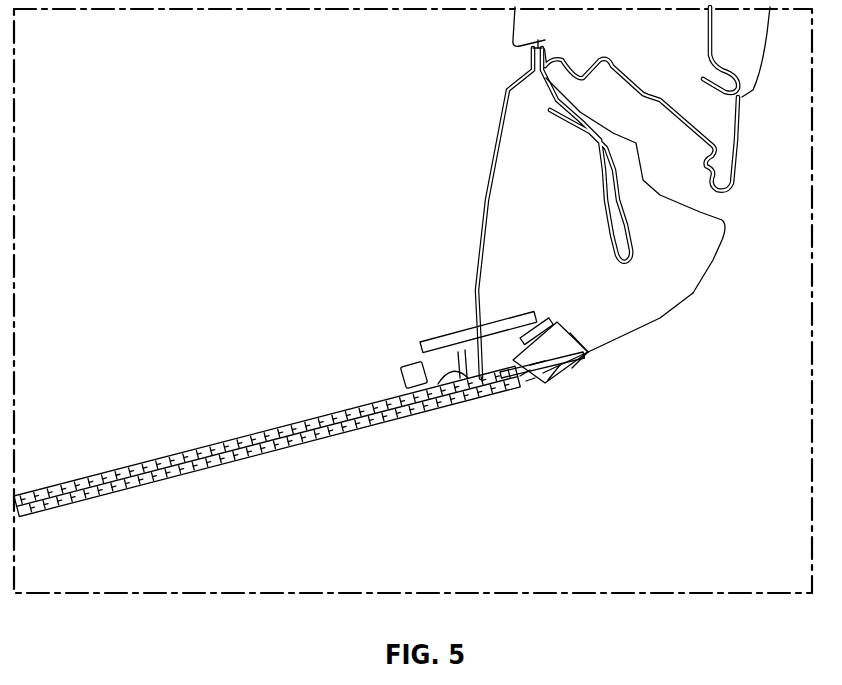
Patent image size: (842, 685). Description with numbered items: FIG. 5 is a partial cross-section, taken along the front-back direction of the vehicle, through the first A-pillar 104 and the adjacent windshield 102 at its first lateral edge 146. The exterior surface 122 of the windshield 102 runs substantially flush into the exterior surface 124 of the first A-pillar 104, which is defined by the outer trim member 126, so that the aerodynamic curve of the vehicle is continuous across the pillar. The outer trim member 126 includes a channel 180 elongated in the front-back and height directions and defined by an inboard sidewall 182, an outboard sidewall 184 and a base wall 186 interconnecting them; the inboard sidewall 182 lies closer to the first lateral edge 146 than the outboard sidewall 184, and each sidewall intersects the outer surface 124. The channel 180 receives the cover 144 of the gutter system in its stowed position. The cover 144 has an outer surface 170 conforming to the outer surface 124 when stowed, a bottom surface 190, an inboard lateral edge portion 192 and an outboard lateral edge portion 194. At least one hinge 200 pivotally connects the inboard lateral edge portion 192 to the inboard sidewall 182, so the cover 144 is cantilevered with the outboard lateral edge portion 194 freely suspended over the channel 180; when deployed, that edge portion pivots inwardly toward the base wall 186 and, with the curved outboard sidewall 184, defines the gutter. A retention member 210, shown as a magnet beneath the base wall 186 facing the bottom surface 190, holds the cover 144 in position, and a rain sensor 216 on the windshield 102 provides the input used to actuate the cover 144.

The front windshield 102 is at (267, 460).
The exterior surface of the windshield 122 is at (257, 458).
The first A-pillar 104 is at (660, 190).
The outer trim member 126 is at (714, 262).
The exterior surface of the first A-pillar 124 is at (695, 293).
The bottom surface 190 is at (532, 312).
The retention member 210 is at (528, 303).
The sensor 216 is at (406, 362).
The base wall 186 is at (553, 318).
The channel 180 is at (562, 326).
The outboard sidewall 184 is at (590, 350).
The outboard lateral edge portion 194 is at (586, 358).
The inboard sidewall 182 is at (517, 382).
The outer surface 170 is at (534, 380).
The cover 144 is at (553, 382).
The inboard lateral edge portion 192 is at (524, 382).
The hinge 200 is at (528, 383).
The first lateral edge of the windshield 146 is at (467, 392).